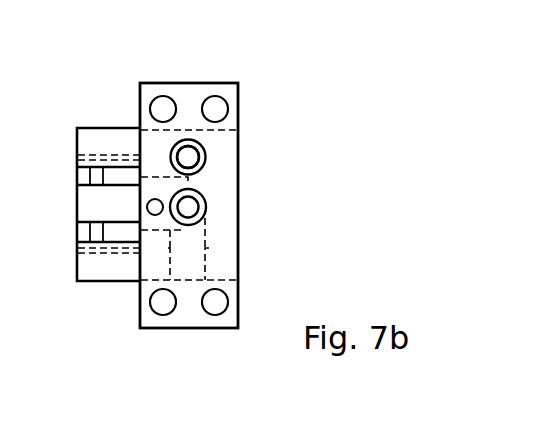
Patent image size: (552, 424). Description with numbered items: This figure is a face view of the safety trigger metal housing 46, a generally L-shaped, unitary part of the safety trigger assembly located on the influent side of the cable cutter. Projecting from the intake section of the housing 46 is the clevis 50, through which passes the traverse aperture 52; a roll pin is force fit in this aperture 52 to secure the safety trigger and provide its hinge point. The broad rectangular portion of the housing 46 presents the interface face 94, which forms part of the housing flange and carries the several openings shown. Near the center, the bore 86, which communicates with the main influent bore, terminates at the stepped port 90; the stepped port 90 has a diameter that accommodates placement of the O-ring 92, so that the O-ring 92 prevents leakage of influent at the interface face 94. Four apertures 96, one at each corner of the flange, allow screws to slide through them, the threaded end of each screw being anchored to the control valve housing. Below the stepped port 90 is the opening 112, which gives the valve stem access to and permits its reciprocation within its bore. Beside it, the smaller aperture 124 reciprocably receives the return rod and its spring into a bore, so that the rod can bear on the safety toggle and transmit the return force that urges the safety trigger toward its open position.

The safety trigger metal housing 46 is at (221, 197).
The clevis 50 is at (78, 204).
The traverse aperture 52 is at (99, 134).
The bore 86 is at (255, 148).
The stepped port 90 is at (238, 148).
The O-ring 92 is at (244, 157).
The interface face 94 is at (230, 228).
The apertures 96 is at (196, 208).
The opening 112 is at (239, 223).
The aperture 124 is at (120, 264).